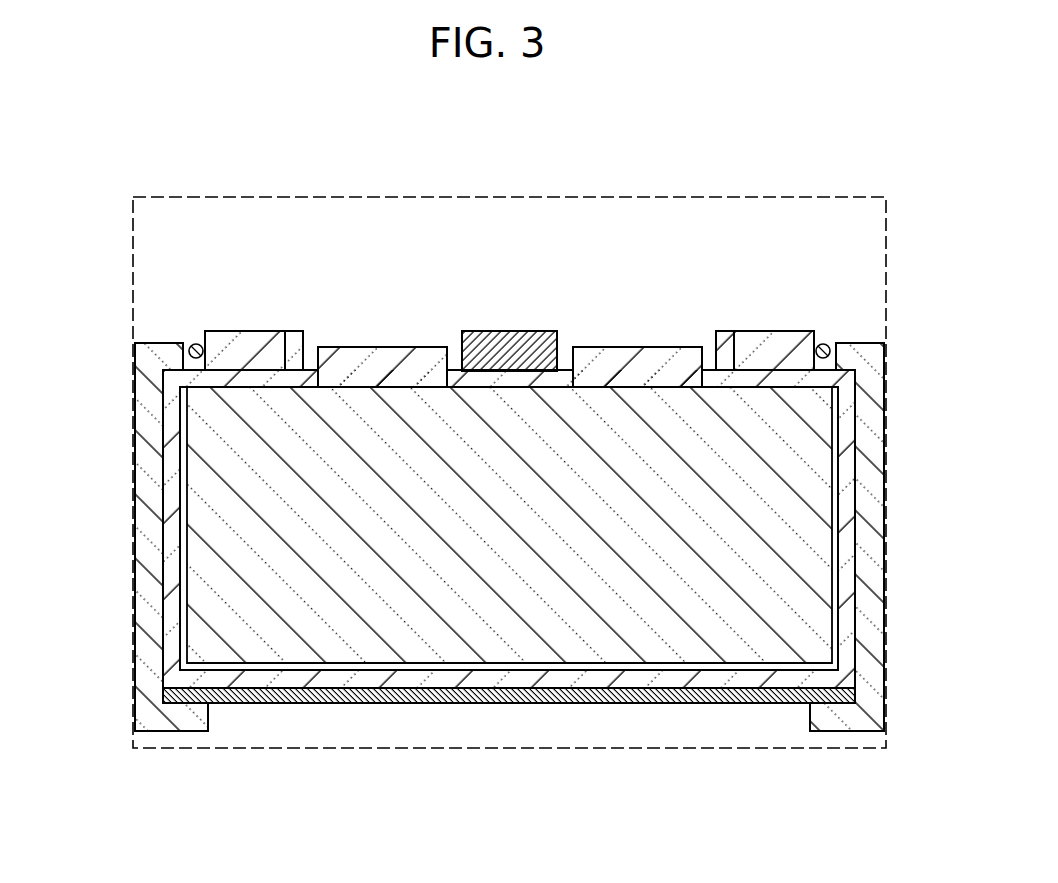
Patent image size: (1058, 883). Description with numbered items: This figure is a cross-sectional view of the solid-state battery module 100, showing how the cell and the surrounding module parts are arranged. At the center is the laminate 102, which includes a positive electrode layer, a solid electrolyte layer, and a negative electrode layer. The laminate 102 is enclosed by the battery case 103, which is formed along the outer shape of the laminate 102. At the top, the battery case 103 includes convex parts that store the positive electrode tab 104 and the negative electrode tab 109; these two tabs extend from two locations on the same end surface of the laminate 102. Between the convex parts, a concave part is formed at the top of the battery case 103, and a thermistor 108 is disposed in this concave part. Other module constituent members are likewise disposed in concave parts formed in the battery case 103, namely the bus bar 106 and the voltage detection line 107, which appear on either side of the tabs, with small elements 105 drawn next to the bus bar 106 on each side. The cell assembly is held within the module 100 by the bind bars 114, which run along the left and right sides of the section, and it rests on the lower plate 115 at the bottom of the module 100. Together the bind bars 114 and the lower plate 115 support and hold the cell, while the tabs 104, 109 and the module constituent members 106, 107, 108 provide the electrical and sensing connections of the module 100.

The solid-state battery module 100 is at (905, 191).
The laminate 102 is at (757, 468).
The battery case 103 is at (845, 392).
The positive electrode tab 104 is at (406, 347).
The insulating film 105 is at (295, 331).
The bus bar 106 is at (245, 331).
The voltage detection line 107 is at (197, 344).
The thermistor 108 is at (508, 331).
The negative electrode tab 109 is at (611, 347).
The bind bars 114 is at (150, 537).
The lower plate 115 is at (345, 703).